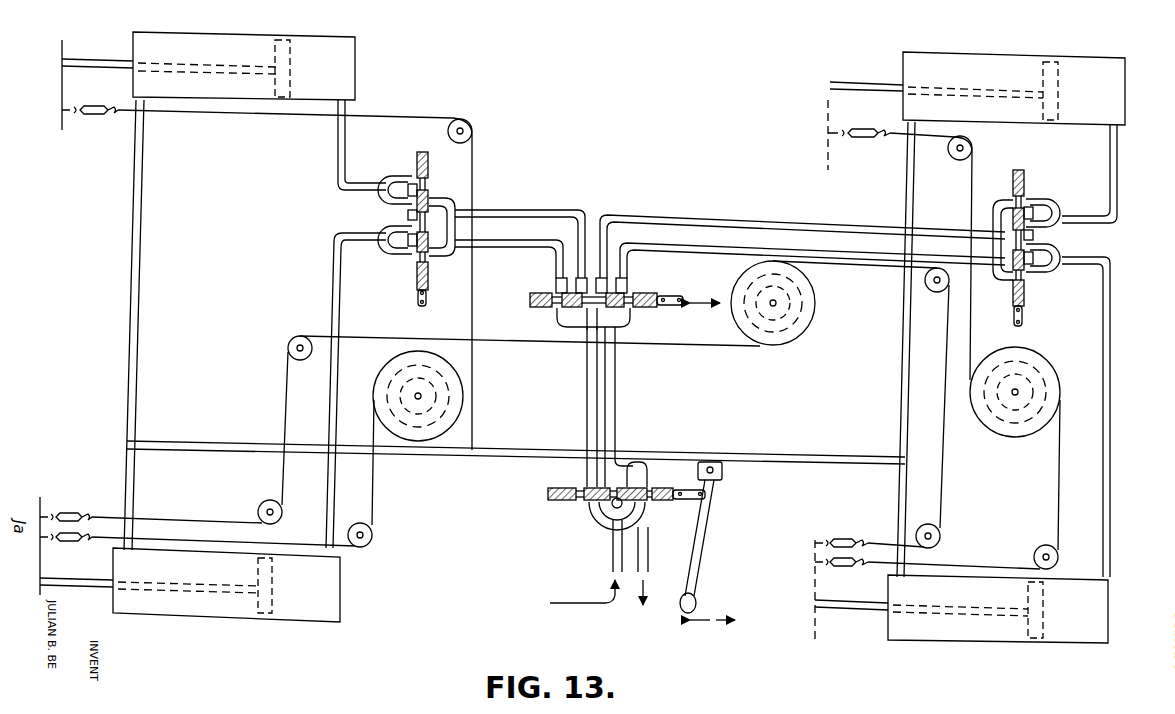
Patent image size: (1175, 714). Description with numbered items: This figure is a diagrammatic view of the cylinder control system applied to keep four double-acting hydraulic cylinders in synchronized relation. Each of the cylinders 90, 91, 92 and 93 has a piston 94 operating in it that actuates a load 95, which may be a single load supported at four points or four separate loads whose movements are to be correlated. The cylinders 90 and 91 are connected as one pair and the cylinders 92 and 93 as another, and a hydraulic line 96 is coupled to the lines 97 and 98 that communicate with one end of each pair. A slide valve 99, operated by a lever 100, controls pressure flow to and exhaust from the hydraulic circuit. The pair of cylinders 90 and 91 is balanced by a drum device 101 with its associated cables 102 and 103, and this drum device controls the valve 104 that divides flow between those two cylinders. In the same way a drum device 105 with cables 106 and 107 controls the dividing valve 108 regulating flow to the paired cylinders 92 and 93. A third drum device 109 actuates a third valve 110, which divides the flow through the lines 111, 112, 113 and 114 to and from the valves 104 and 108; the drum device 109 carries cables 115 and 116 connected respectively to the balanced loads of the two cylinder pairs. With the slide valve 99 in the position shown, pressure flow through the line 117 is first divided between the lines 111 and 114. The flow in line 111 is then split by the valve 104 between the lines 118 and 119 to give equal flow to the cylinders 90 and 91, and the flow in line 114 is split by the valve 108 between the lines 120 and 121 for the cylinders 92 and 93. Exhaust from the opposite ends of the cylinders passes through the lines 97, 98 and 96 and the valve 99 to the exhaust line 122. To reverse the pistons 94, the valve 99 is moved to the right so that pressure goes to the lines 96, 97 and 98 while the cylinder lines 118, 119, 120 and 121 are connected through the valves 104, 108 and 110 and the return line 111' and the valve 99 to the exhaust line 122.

The double-acting cylinder 90 is at (200, 620).
The double-acting cylinder 91 is at (355, 57).
The double-acting cylinder 92 is at (1125, 88).
The double-acting cylinder 93 is at (1110, 606).
The piston 94 is at (290, 50).
The load 95 is at (62, 118).
The hydraulic line 96 is at (496, 449).
The line 97 is at (142, 287).
The line 98 is at (905, 342).
The slide valve 99 is at (575, 501).
The lever 100 is at (706, 520).
The drum device 101 is at (395, 366).
The cable 102 is at (374, 497).
The cable 103 is at (474, 162).
The valve 104 is at (415, 159).
The drum device 105 is at (1040, 366).
The cable 106 is at (974, 173).
The cable 107 is at (1060, 487).
The dividing valve 108 is at (1027, 200).
The drum device 109 is at (815, 300).
The valve 110 is at (640, 298).
The line 111 is at (512, 238).
The return line 111' is at (571, 407).
The line 112 is at (504, 212).
The line 113 is at (650, 217).
The line 114 is at (697, 243).
The cable 115 is at (724, 356).
The cable 116 is at (883, 270).
The pressure line 117 is at (616, 414).
The cylinder line 118 is at (333, 282).
The cylinder line 119 is at (337, 146).
The cylinder line 120 is at (1117, 187).
The cylinder line 121 is at (1112, 308).
The exhaust line 122 is at (648, 549).